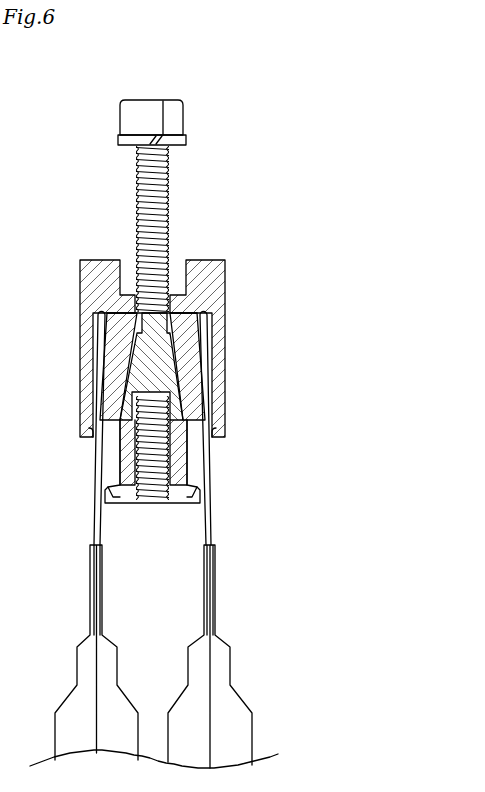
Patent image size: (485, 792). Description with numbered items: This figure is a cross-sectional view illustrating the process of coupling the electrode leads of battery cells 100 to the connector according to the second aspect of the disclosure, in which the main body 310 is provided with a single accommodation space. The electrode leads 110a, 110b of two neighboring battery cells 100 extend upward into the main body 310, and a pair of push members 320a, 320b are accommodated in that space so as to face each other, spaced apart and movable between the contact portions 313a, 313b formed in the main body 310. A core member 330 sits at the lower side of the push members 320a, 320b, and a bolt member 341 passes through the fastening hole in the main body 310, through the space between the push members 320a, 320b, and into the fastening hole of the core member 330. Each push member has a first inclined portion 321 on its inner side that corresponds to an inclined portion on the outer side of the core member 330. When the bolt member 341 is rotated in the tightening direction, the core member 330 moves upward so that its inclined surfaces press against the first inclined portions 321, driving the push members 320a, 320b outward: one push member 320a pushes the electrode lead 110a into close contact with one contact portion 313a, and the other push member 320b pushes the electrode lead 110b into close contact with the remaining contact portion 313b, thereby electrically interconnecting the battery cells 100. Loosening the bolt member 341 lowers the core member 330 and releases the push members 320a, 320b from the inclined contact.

The bolt member 341 is at (161, 100).
The main body 310 is at (92, 260).
The push member 320a is at (113, 358).
The push member 320b is at (192, 358).
The first inclined portion 321 is at (181, 403).
The contact portion 313a is at (85, 437).
The contact portion 313b is at (214, 437).
The electrode lead 110a is at (93, 500).
The electrode lead 110b is at (212, 500).
The core member 330 is at (125, 504).
The battery cell 100 is at (63, 738).